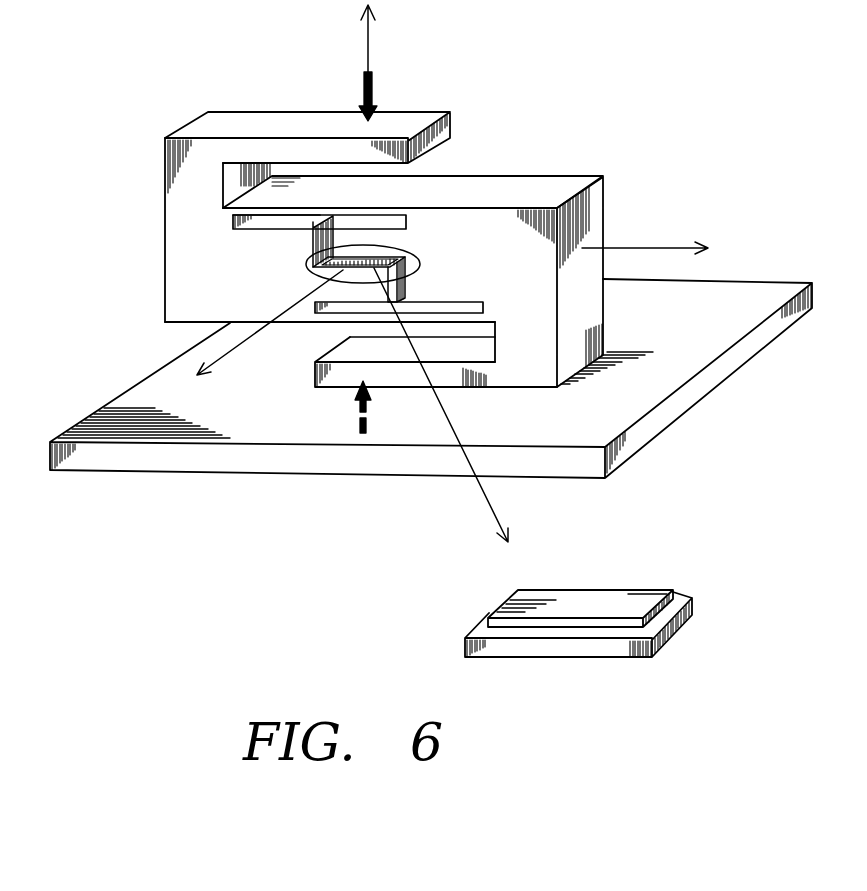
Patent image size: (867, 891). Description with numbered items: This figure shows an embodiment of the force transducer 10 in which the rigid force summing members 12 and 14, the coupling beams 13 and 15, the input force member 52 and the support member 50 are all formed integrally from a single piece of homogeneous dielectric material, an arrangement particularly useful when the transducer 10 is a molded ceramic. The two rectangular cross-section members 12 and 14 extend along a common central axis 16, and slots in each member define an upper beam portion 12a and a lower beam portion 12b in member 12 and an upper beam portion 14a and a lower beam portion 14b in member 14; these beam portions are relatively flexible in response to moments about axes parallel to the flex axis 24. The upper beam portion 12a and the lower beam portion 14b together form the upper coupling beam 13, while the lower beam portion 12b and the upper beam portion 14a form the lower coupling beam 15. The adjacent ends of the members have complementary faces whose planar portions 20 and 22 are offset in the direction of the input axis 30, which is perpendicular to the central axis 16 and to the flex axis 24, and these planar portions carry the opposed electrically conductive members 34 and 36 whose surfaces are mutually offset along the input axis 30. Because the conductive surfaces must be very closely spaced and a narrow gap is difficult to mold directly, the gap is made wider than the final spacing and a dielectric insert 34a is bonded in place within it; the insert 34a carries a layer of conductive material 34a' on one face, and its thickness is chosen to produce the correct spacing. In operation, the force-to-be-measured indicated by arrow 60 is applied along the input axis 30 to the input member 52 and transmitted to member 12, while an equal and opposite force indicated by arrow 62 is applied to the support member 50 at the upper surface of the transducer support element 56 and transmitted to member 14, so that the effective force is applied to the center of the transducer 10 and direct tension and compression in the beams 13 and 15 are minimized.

The transducer 10 is at (140, 312).
The force summing member 12 is at (182, 244).
The upper beam portion 12a is at (287, 212).
The lower beam portion 12b is at (335, 323).
The upper coupling beam 13 is at (352, 200).
The force summing member 14 is at (522, 230).
The upper beam portion 14a is at (440, 315).
The lower beam portion 14b is at (368, 218).
The lower coupling beam 15 is at (410, 328).
The central axis 16 is at (665, 248).
The planar portion 20 is at (397, 288).
The planar portion 22 is at (388, 260).
The second reference axis 24 is at (227, 357).
The first reference axis 30 is at (372, 48).
The electrically conductive member 34 is at (320, 277).
The insert 34a is at (578, 638).
The conductive material layer 34a' is at (580, 590).
The electrically conductive member 36 is at (313, 247).
The support member 50 is at (545, 377).
The input force member 52 is at (180, 173).
The transducer support element 56 is at (695, 385).
The arrow 60 is at (372, 90).
The arrow 62 is at (367, 415).